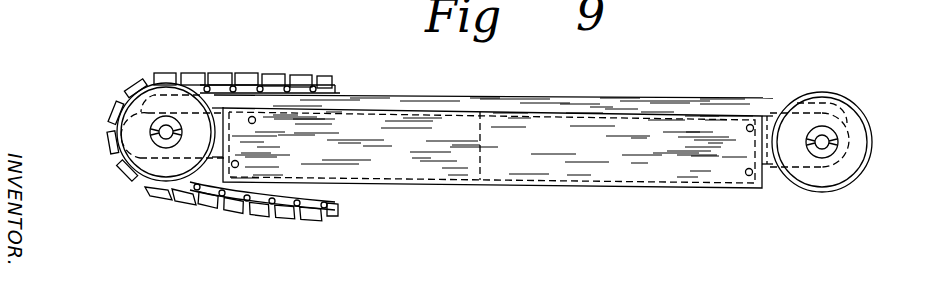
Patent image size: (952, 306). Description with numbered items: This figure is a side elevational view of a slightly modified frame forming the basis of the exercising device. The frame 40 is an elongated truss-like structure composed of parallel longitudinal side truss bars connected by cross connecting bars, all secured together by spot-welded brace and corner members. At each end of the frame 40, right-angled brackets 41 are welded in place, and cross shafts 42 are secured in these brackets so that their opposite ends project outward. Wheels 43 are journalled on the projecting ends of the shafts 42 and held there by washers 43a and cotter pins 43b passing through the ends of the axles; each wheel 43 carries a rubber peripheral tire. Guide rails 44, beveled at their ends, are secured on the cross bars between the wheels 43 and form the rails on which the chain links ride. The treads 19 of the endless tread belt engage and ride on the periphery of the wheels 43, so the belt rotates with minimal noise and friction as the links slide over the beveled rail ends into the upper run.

The treads 19 is at (247, 60).
The frame 40 is at (492, 168).
The right-angled brackets 41 is at (746, 180).
The cross shafts 42 is at (543, 143).
The wheels 43 is at (520, 153).
The washers 43a is at (494, 176).
The cotter pins 43b is at (538, 172).
The guide rails 44 is at (493, 78).